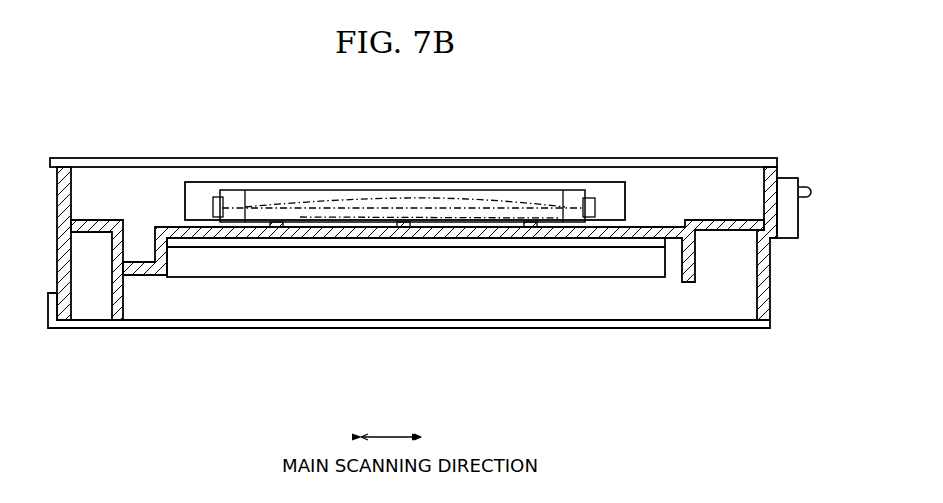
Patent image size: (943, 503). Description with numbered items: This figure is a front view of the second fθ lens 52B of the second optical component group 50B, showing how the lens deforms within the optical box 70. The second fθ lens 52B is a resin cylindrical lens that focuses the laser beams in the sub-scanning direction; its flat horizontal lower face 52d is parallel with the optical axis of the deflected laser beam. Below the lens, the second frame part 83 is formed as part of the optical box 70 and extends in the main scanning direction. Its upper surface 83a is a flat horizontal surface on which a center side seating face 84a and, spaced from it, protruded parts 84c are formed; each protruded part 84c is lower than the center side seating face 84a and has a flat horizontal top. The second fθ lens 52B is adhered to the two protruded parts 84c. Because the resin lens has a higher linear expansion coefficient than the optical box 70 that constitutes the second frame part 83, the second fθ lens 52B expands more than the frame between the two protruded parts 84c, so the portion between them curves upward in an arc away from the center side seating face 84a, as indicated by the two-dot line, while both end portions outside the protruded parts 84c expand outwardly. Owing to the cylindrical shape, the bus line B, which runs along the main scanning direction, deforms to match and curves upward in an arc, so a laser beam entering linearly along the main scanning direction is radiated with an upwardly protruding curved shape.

The second optical component group 50B is at (219, 119).
The optical box 70 is at (140, 157).
The second fθ lens 52B is at (272, 182).
The lower face 52d is at (340, 223).
The bus line B is at (408, 203).
The second frame part 83 is at (176, 238).
The upper surface 83a is at (223, 227).
The center side seating face 84a is at (400, 228).
The protruded parts 84c is at (276, 228).